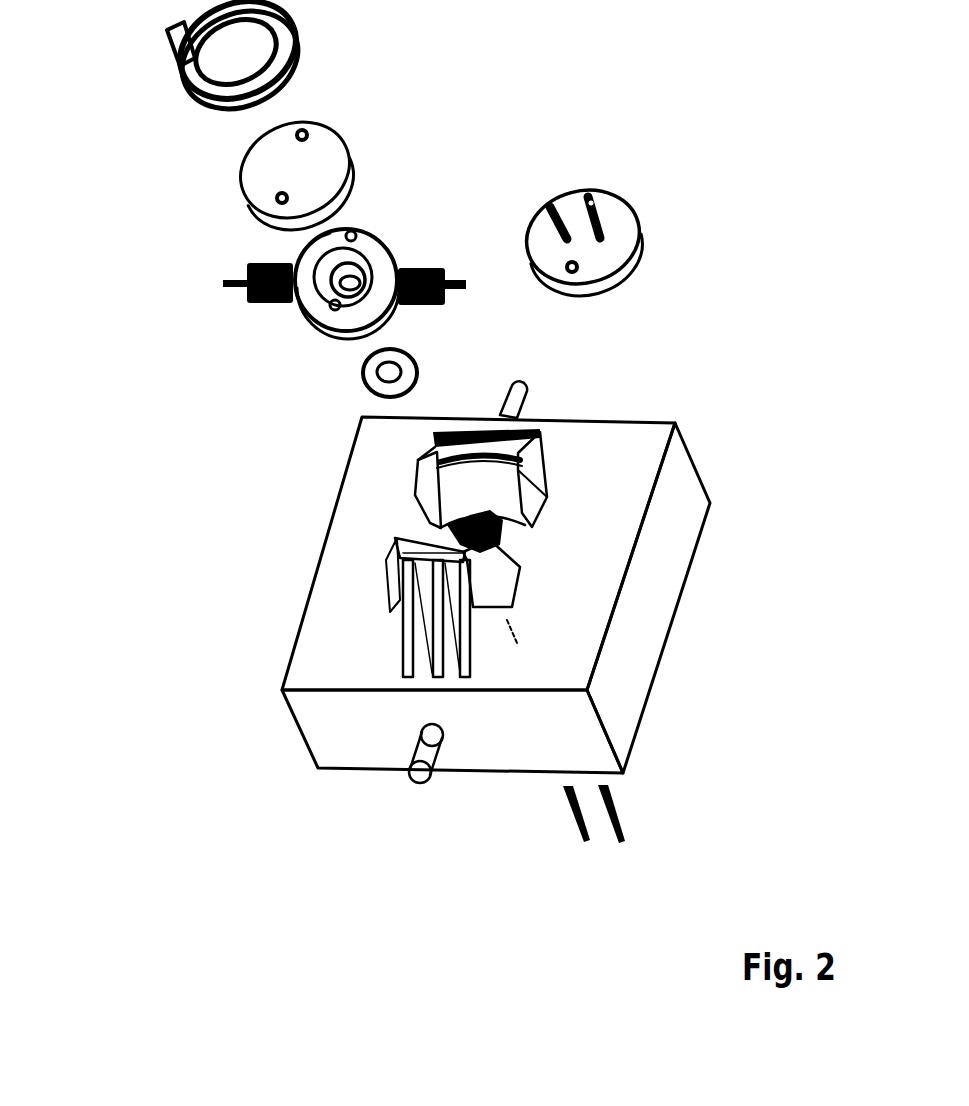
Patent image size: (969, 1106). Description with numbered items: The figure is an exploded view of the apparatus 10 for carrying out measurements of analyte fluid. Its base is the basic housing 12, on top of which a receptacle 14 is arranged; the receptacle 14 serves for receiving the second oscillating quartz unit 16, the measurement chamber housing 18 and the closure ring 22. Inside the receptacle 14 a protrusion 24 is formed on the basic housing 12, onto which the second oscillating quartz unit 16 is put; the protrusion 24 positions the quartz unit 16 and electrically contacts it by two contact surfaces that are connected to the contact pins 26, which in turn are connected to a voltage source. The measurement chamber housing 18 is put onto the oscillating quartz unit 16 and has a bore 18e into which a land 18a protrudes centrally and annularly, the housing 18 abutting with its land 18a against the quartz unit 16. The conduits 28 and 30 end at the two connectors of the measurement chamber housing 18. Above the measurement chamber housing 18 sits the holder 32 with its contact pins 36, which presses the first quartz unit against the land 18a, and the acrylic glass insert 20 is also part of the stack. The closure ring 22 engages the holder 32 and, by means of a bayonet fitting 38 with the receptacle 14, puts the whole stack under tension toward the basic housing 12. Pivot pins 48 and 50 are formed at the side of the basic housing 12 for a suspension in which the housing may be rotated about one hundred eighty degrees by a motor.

The apparatus 10 is at (441, 658).
The basic housing 12 is at (660, 587).
The receptacle 14 is at (528, 508).
The second oscillating quartz unit 16 is at (363, 379).
The measurement chamber housing 18 is at (444, 229).
The land 18a is at (367, 258).
The bore in the measurement chamber housing 18e is at (305, 238).
The acrylic glass insert 20 is at (262, 177).
The closure ring 22 is at (178, 73).
The protrusion 24 is at (503, 546).
The contact pins 26 is at (620, 808).
The conduit, left 28 is at (226, 283).
The conduit, right 30 is at (466, 284).
The holder 32 is at (671, 201).
The contact pins 36 is at (600, 190).
The bayonet fitting 38 is at (433, 483).
The pivot pin, left 48 is at (407, 768).
The pivot pin, right 50 is at (527, 393).